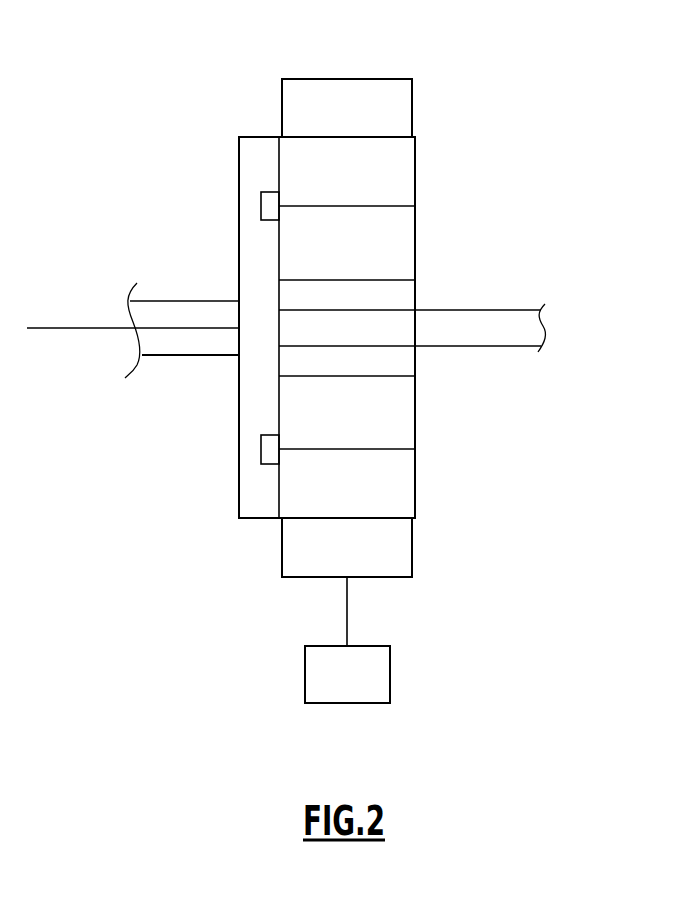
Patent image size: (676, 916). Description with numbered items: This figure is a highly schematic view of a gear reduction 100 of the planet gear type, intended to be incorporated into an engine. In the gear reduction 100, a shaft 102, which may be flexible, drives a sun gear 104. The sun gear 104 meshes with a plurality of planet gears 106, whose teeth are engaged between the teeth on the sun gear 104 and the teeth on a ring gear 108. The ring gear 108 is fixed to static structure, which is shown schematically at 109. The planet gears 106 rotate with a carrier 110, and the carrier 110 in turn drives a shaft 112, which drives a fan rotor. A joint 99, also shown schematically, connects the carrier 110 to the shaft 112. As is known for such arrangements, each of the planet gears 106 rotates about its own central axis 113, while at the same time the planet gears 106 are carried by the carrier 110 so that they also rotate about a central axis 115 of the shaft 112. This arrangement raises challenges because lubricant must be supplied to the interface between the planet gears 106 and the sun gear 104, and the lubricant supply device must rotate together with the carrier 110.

The joint 99 is at (239, 355).
The gear reduction 100 is at (495, 193).
The shaft 102 is at (452, 316).
The sun gear 104 is at (319, 293).
The planet gears 106 is at (390, 172).
The ring gear 108 is at (342, 92).
The static structure 109 is at (367, 669).
The carrier 110 is at (253, 172).
The shaft 112 is at (175, 338).
The central axis 113 is at (313, 447).
The central axis 115 is at (65, 328).